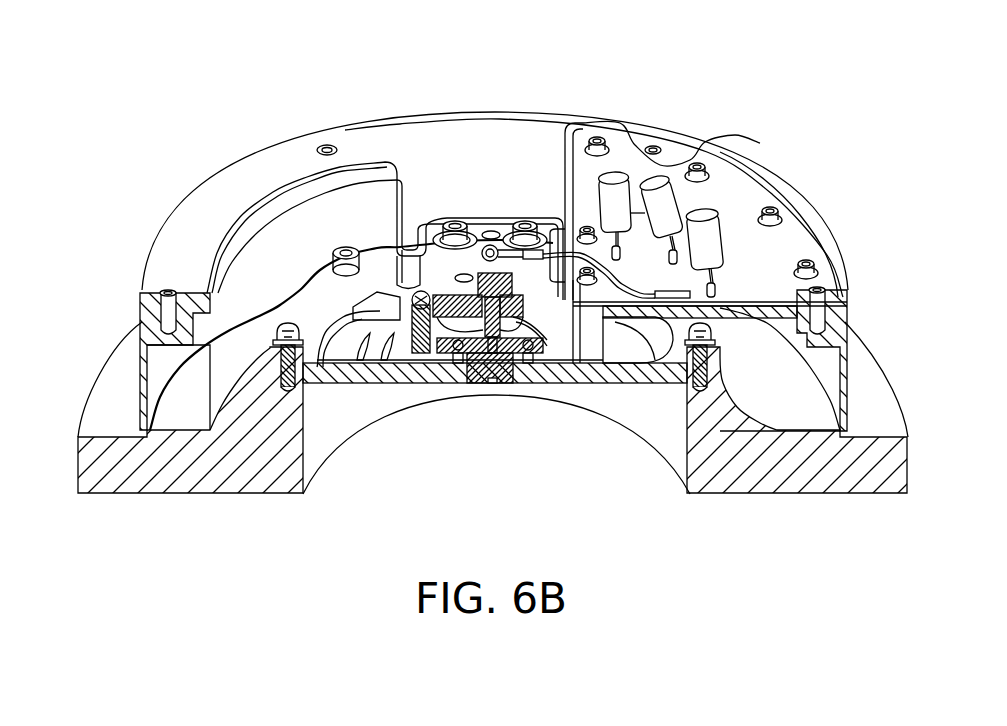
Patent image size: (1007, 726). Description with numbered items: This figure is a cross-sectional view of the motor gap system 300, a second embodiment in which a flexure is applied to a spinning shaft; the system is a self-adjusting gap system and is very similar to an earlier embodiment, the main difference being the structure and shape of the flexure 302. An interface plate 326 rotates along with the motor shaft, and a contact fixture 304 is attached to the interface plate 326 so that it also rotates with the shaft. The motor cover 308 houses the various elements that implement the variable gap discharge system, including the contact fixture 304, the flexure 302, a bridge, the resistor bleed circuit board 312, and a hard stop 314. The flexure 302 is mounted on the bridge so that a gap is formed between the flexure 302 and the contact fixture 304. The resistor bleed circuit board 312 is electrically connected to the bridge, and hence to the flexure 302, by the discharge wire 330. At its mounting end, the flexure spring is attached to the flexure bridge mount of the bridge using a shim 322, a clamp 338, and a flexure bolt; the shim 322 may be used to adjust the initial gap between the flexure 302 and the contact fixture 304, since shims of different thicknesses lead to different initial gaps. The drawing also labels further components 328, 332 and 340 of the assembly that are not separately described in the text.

The motor gap system 300 is at (186, 128).
The flexure 302 is at (463, 327).
The contact fixture 304 is at (495, 383).
The motor cover 308 is at (205, 205).
The bleed circuit board 312 is at (718, 200).
The hard stop 314 is at (403, 248).
The shim 322 is at (340, 330).
The interface plate 326 is at (647, 380).
The capacitors 328 is at (707, 237).
The discharge wire 330 is at (623, 283).
The mounting bosses 332 is at (454, 217).
The clamp 338 is at (388, 385).
The terminal bolt 340 is at (496, 236).